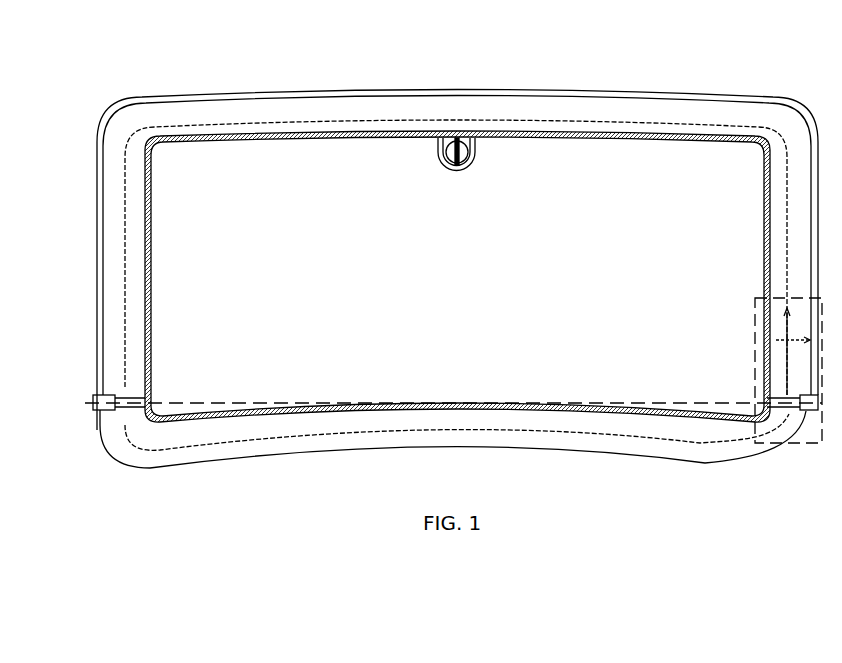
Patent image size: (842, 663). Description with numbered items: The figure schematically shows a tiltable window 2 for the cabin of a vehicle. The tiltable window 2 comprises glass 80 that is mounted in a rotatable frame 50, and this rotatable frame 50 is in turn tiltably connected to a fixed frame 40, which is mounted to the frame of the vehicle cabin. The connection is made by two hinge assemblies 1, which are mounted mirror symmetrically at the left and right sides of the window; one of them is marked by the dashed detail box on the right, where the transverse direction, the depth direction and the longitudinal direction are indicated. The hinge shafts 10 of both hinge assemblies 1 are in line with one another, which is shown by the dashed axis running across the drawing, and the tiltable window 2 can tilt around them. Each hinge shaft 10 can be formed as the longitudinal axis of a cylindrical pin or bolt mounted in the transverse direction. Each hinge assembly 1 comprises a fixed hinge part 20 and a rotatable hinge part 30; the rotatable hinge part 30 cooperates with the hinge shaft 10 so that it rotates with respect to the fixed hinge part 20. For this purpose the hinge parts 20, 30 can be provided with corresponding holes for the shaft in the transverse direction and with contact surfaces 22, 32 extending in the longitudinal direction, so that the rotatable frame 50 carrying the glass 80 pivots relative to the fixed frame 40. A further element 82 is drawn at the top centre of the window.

The hinge assembly 1 is at (157, 338).
The tiltable window 2 is at (661, 90).
The hinge shaft 10 is at (155, 405).
The fixed hinge part 20 is at (101, 407).
The contact surface 22 is at (807, 412).
The rotatable hinge part 30 is at (138, 399).
The contact surface 32 is at (788, 418).
The fixed frame 40 is at (312, 94).
The rotatable frame 50 is at (772, 269).
The glass 80 is at (383, 156).
The wiper mount 82 is at (470, 140).